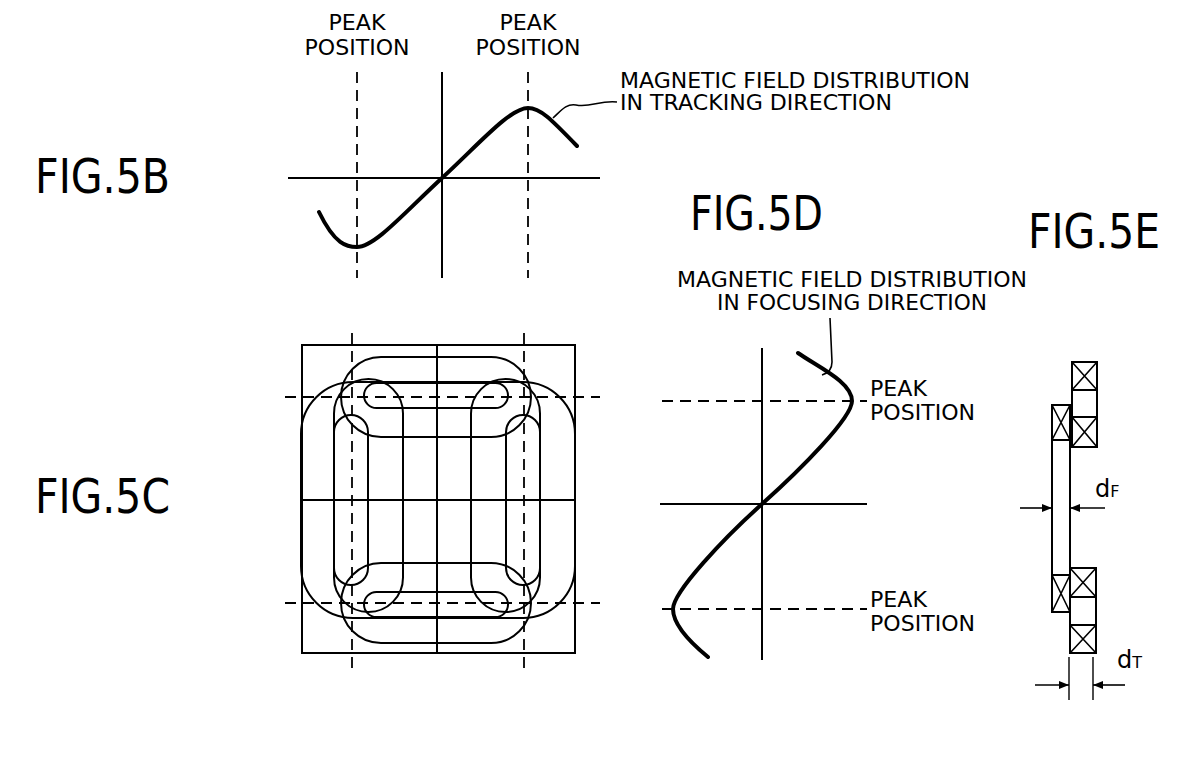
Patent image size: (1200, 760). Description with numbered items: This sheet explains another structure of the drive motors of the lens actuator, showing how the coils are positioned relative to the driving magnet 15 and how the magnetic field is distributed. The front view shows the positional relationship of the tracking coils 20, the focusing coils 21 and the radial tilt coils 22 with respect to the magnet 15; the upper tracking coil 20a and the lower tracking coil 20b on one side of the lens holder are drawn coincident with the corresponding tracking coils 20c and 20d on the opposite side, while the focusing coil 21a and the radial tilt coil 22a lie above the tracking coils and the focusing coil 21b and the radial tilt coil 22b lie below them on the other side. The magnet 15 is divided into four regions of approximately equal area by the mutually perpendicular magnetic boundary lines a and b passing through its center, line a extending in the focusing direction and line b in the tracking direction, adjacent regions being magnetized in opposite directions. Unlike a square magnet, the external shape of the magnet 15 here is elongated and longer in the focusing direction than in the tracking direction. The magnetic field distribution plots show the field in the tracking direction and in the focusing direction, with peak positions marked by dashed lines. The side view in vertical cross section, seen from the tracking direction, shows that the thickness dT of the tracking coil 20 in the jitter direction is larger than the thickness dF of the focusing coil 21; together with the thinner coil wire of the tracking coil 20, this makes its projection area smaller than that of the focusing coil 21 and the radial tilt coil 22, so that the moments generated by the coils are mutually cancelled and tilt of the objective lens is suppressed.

In FIG. 5C, the plate-shaped magnet 15 is at (548, 634).
In FIG. 5C, the tracking coil 20a is at (492, 369).
In FIG. 5C, the tracking coil 20b is at (498, 637).
In FIG. 5C, the tracking coil 20c is at (487, 360).
In FIG. 5C, the tracking coil 20d is at (436, 648).
In FIG. 5E, the tracking coil 20 is at (1098, 375).
In FIG. 5C, the focusing coil 21a is at (323, 393).
In FIG. 5C, the focusing coil 21b is at (311, 463).
In FIG. 5C, the radial tilt coil 22a is at (553, 392).
In FIG. 5C, the radial tilt coil 22b is at (563, 471).
In FIG. 5E, the focusing coil 21 is at (1052, 427).
In FIG. 5E, the radial tilt coil 22 is at (1002, 508).
In FIG. 5C, the magnetic boundary line a is at (430, 608).
In FIG. 5C, the magnetic boundary line b is at (535, 499).